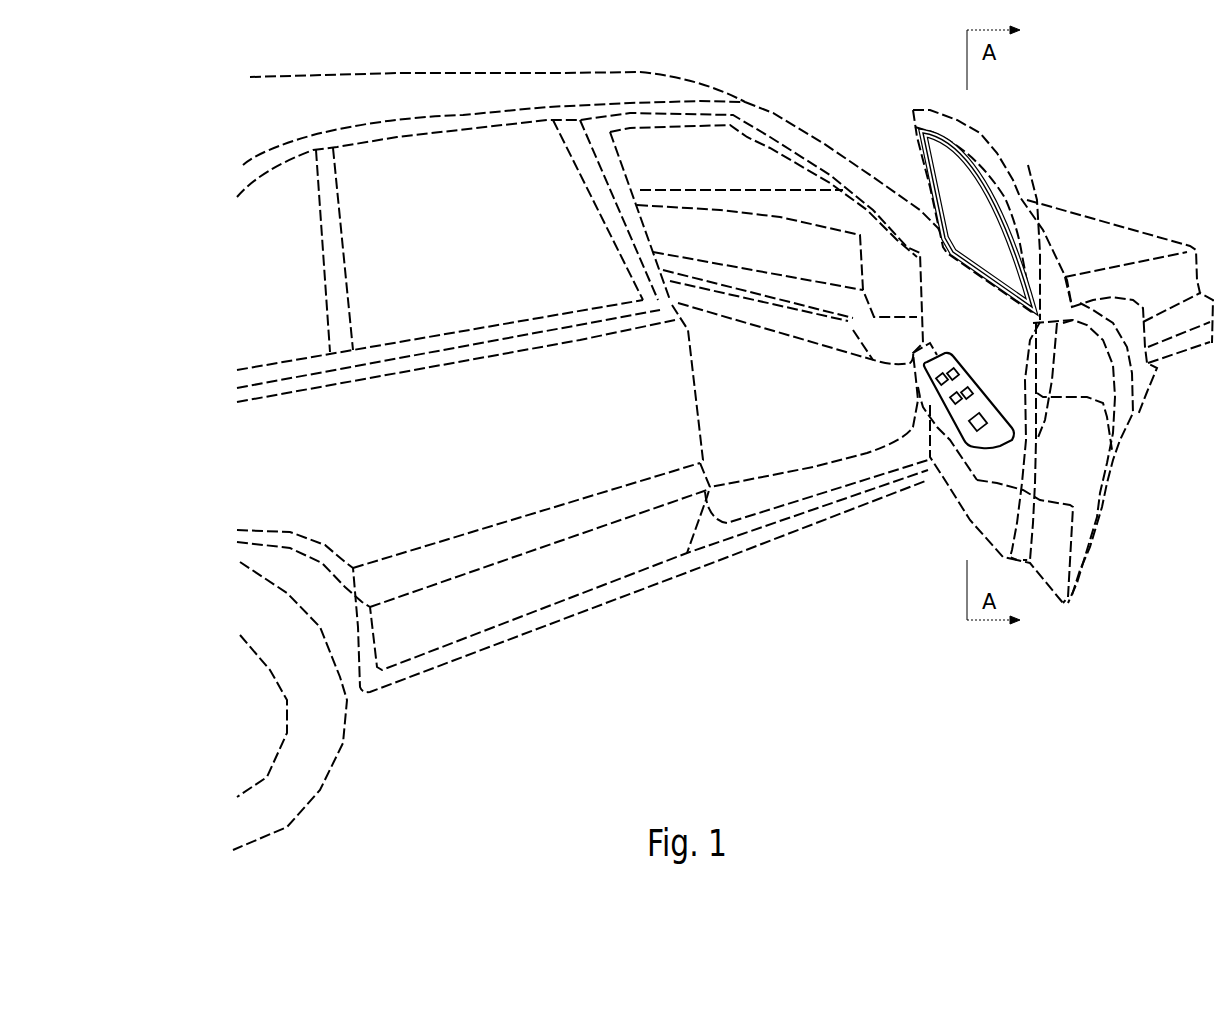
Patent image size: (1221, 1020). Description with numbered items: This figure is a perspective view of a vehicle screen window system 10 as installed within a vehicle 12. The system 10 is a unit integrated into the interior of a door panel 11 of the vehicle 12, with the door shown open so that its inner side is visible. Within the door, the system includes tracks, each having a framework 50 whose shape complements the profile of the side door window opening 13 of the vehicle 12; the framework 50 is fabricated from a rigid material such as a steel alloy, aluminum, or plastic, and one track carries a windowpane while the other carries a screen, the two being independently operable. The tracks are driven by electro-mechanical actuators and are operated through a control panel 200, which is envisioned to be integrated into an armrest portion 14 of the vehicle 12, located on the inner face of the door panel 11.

The vehicle screen window system 10 is at (1078, 134).
The door panel 11 is at (1000, 363).
The vehicle 12 is at (770, 117).
The side door window opening 13 is at (396, 196).
The armrest portion 14 is at (921, 381).
The framework 50 is at (942, 132).
The control panel 200 is at (980, 433).